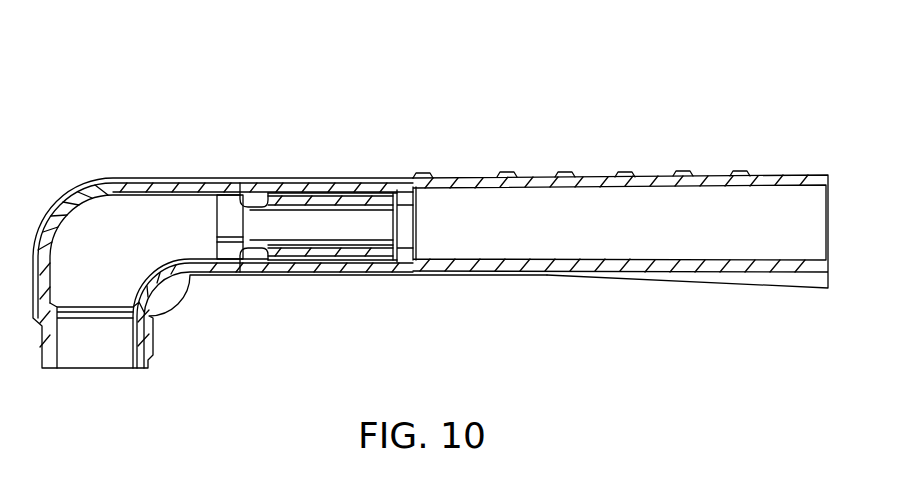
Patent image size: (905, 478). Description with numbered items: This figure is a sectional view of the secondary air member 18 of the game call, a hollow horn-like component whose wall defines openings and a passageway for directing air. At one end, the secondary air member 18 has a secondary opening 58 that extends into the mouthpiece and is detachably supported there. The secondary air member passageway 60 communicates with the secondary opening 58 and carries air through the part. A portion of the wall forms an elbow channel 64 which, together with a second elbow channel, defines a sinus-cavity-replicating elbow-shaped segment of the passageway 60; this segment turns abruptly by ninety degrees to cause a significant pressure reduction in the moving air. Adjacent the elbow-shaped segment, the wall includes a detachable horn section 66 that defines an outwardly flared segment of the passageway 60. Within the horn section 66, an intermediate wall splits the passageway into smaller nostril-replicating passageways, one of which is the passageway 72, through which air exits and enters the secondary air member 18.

The secondary air member 18 is at (303, 98).
The secondary opening 58 is at (94, 370).
The secondary air member passageway 60 is at (189, 215).
The elbow channel 64 is at (72, 195).
The horn section 66 is at (546, 178).
The nostril-replicating passageway 72 is at (647, 215).